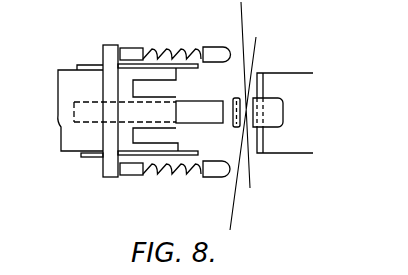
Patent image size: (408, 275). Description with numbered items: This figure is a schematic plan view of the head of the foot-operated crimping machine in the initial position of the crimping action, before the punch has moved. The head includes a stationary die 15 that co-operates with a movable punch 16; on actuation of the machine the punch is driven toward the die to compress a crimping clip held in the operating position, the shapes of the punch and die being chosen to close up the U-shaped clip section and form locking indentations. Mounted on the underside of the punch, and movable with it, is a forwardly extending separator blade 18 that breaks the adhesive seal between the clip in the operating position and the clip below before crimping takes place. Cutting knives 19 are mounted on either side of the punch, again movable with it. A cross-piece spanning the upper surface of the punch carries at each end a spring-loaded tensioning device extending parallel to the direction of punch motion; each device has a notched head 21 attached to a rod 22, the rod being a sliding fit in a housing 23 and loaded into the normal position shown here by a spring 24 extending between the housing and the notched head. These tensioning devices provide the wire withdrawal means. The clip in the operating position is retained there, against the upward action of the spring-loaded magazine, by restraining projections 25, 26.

The stationary die 15 is at (288, 145).
The movable punch 16 is at (81, 145).
The separator blade 18 is at (197, 118).
The cutting knives 19 is at (185, 69).
The notched head 21 is at (214, 176).
The rod 22 is at (168, 49).
The housing 23 is at (129, 50).
The spring 24 is at (187, 49).
The restraining projection 25 is at (233, 100).
The restraining projection 26 is at (282, 113).